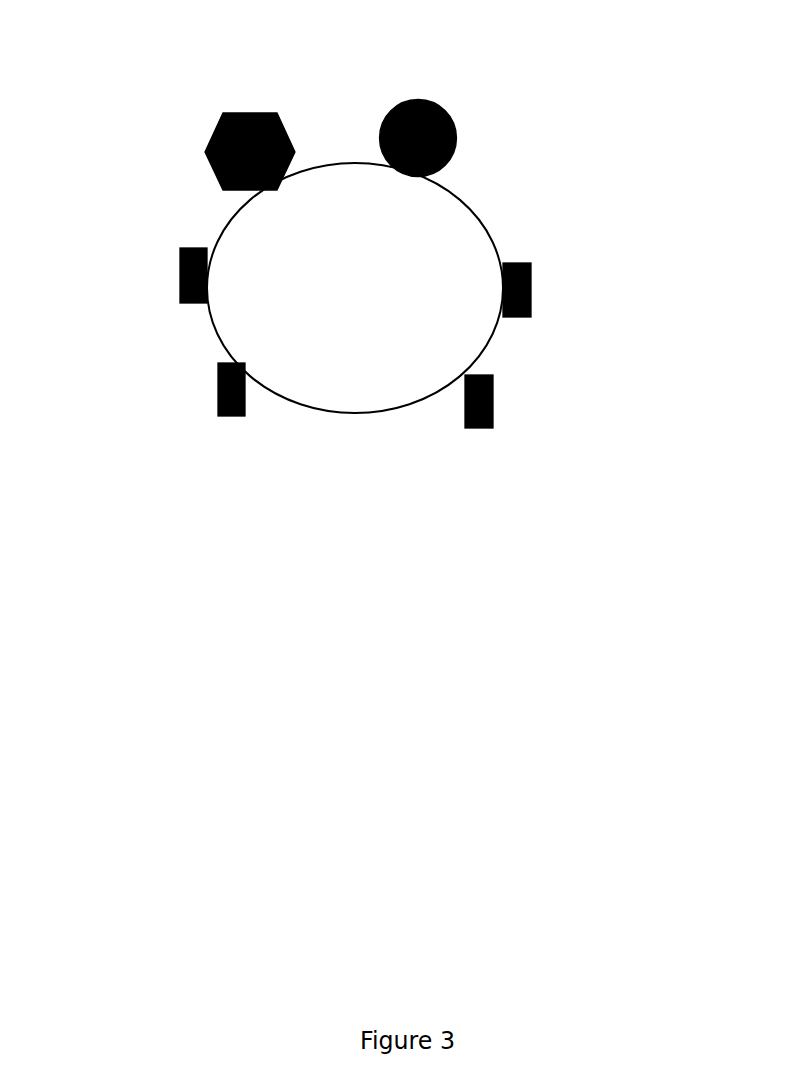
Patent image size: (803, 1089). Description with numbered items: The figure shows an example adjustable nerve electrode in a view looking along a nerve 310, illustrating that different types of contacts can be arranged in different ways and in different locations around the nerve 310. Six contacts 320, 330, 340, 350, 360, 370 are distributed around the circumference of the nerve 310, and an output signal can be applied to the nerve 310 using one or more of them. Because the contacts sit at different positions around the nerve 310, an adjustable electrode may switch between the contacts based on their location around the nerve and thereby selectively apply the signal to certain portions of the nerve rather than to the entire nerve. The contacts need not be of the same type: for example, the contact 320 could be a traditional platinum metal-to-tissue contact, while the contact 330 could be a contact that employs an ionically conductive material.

The nerve 310 is at (491, 216).
The contact 320 is at (544, 289).
The contact 330 is at (458, 436).
The contact 340 is at (222, 424).
The contact 350 is at (172, 287).
The contact 360 is at (193, 153).
The contact 370 is at (454, 104).